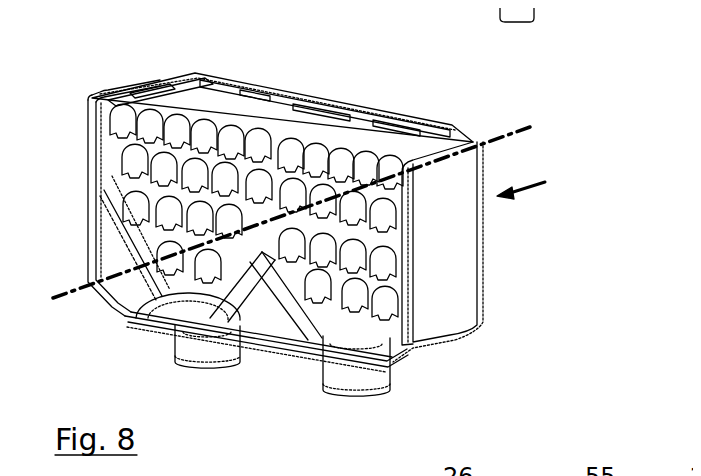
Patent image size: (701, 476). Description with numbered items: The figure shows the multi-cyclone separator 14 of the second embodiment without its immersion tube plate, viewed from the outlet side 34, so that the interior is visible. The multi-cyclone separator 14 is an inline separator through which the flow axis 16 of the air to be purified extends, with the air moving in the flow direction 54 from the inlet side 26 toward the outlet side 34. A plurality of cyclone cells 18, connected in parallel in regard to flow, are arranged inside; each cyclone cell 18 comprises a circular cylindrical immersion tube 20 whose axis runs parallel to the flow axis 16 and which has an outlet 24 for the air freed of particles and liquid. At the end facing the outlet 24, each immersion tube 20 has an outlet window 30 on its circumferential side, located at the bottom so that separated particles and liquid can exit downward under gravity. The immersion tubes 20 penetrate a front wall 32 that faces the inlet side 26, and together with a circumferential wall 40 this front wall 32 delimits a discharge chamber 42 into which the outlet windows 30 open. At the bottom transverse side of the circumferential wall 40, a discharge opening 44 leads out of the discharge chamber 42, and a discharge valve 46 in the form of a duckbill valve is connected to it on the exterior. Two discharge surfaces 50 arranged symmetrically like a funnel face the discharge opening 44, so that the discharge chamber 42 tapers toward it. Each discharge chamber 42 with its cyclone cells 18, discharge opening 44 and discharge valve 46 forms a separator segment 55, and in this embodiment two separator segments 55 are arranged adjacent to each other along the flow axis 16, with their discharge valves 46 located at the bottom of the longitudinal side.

The multi-cyclone separator 14 is at (85, 63).
The flow axis 16 is at (507, 132).
The cyclone cell 18 is at (234, 125).
The immersion tube 20 is at (275, 140).
The outlet 24 is at (368, 158).
The inlet side 26 is at (496, 274).
The outlet window 30 is at (127, 137).
The front wall 32 is at (347, 313).
The outlet side 34 is at (100, 226).
The circumferential wall 40 is at (205, 88).
The discharge chamber 42 is at (120, 187).
The discharge opening 44 is at (202, 307).
The discharge valve 46 is at (188, 346).
The discharge surface 50 is at (147, 247).
The flow direction 54 is at (545, 182).
The separator segment 55 is at (108, 178).